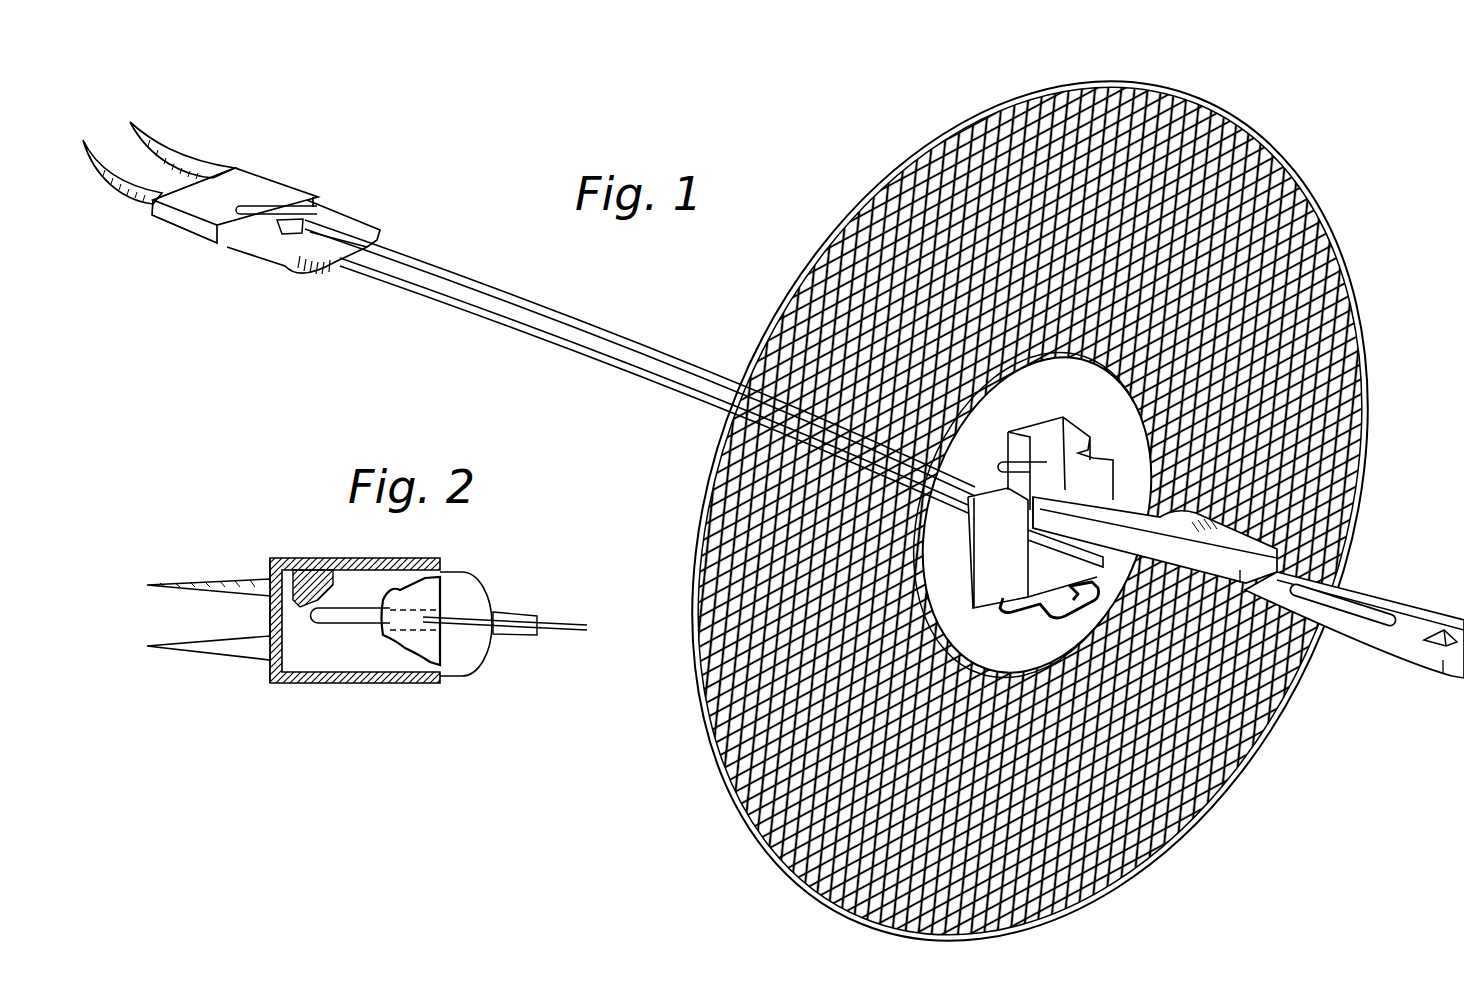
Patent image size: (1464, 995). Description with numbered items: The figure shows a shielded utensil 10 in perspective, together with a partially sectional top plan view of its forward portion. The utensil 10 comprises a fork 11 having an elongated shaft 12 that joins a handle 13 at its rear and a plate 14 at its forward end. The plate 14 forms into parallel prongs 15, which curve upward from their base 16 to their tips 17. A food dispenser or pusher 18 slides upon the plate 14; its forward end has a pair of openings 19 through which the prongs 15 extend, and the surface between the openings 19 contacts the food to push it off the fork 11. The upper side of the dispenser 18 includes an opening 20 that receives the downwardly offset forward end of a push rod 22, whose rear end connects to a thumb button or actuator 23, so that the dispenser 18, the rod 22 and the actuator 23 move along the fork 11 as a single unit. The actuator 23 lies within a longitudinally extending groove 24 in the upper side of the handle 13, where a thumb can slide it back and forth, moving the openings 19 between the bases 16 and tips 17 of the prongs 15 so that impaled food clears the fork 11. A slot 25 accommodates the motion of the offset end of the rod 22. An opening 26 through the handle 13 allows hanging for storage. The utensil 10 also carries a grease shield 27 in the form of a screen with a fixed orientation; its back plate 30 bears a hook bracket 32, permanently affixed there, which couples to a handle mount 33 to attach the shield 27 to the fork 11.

In FIG. 1, the shielded utensil 10 is at (505, 140).
In FIG. 1, the fork 11 is at (600, 365).
In FIG. 1, the elongated shaft 12 is at (398, 286).
In FIG. 2, the elongated shaft 12 is at (512, 610).
In FIG. 1, the handle 13 is at (1358, 655).
In FIG. 1, the plate 14 is at (345, 230).
In FIG. 2, the plate 14 is at (455, 590).
In FIG. 1, the prongs 15 is at (175, 147).
In FIG. 2, the prongs 15 is at (180, 600).
In FIG. 1, the base 16 is at (222, 172).
In FIG. 2, the base 16 is at (270, 655).
In FIG. 1, the tips 17 is at (93, 138).
In FIG. 2, the tips 17 is at (145, 582).
In FIG. 1, the food dispenser or pusher 18 is at (245, 185).
In FIG. 2, the food dispenser or pusher 18 is at (290, 565).
In FIG. 2, the openings 19 is at (268, 632).
In FIG. 1, the opening 20 is at (235, 212).
In FIG. 1, the push rod 22 is at (430, 270).
In FIG. 2, the push rod 22 is at (566, 622).
In FIG. 1, the thumb button or actuator 23 is at (1210, 548).
In FIG. 1, the longitudinally extending groove 24 is at (1358, 594).
In FIG. 1, the slot 25 is at (300, 218).
In FIG. 2, the slot 25 is at (340, 625).
In FIG. 1, the opening 26 is at (1460, 596).
In FIG. 1, the shield 27 is at (893, 158).
In FIG. 1, the back plate 30 is at (1030, 411).
In FIG. 1, the hook bracket 32 is at (1040, 620).
In FIG. 1, the handle mount 33 is at (1080, 416).